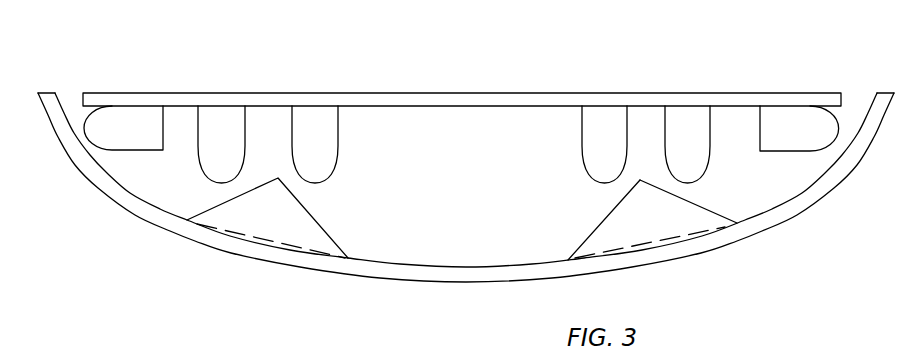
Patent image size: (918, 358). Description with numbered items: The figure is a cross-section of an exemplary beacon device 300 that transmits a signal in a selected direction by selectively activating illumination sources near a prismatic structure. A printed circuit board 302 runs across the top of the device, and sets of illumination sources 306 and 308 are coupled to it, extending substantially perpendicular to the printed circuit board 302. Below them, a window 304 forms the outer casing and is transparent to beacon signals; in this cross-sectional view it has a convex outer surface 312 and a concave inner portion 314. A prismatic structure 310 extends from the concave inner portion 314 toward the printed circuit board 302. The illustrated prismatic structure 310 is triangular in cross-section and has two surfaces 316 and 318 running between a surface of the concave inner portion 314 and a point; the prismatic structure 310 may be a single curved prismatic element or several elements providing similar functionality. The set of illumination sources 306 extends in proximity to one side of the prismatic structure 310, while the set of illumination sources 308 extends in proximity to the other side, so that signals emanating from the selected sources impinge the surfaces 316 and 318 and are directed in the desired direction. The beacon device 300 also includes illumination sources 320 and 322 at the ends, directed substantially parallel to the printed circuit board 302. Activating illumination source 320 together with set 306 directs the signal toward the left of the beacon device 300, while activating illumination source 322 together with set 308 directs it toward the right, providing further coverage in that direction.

The beacon device 300 is at (413, 37).
The printed circuit board 302 is at (458, 100).
The window 304 is at (454, 187).
The set of illumination sources 306 is at (313, 122).
The set of illumination sources 308 is at (218, 115).
The prismatic structure 310 is at (467, 249).
The convex outer surface 312 is at (190, 236).
The concave inner portion 314 is at (131, 193).
The surface 316 is at (700, 206).
The surface 318 is at (602, 222).
The illumination source 320 is at (133, 113).
The illumination source 322 is at (780, 118).